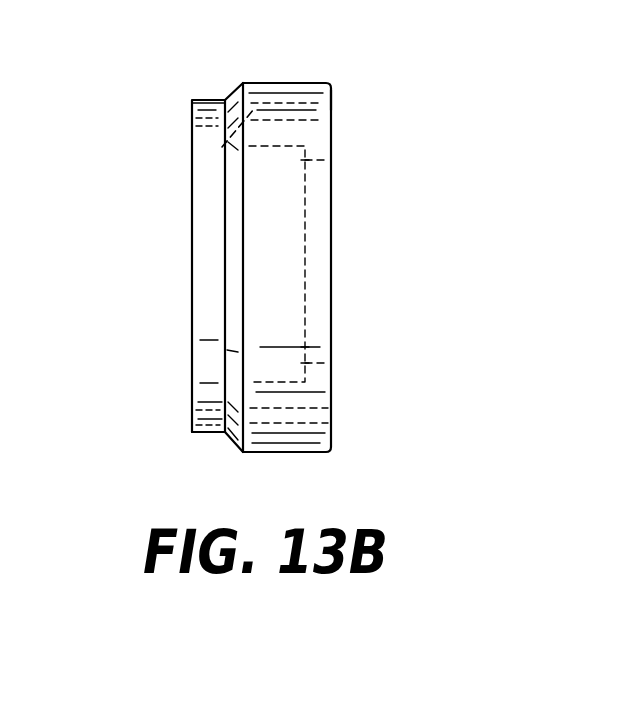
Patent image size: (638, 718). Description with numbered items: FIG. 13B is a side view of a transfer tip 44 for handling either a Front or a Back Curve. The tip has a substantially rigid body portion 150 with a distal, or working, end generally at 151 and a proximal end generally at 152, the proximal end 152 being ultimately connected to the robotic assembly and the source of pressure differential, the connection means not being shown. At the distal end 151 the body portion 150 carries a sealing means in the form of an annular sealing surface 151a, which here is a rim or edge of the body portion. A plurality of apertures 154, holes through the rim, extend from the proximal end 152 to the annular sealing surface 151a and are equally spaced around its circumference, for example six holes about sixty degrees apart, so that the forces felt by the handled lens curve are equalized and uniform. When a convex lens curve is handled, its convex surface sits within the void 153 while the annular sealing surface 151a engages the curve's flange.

The nozzle assembly 44 is at (408, 434).
The body portion 150 is at (295, 98).
The distal end 151 is at (190, 100).
The annular sealing surface 151a is at (196, 99).
The proximal end 152 is at (331, 98).
The void 153 is at (277, 268).
The apertures 154 is at (222, 147).